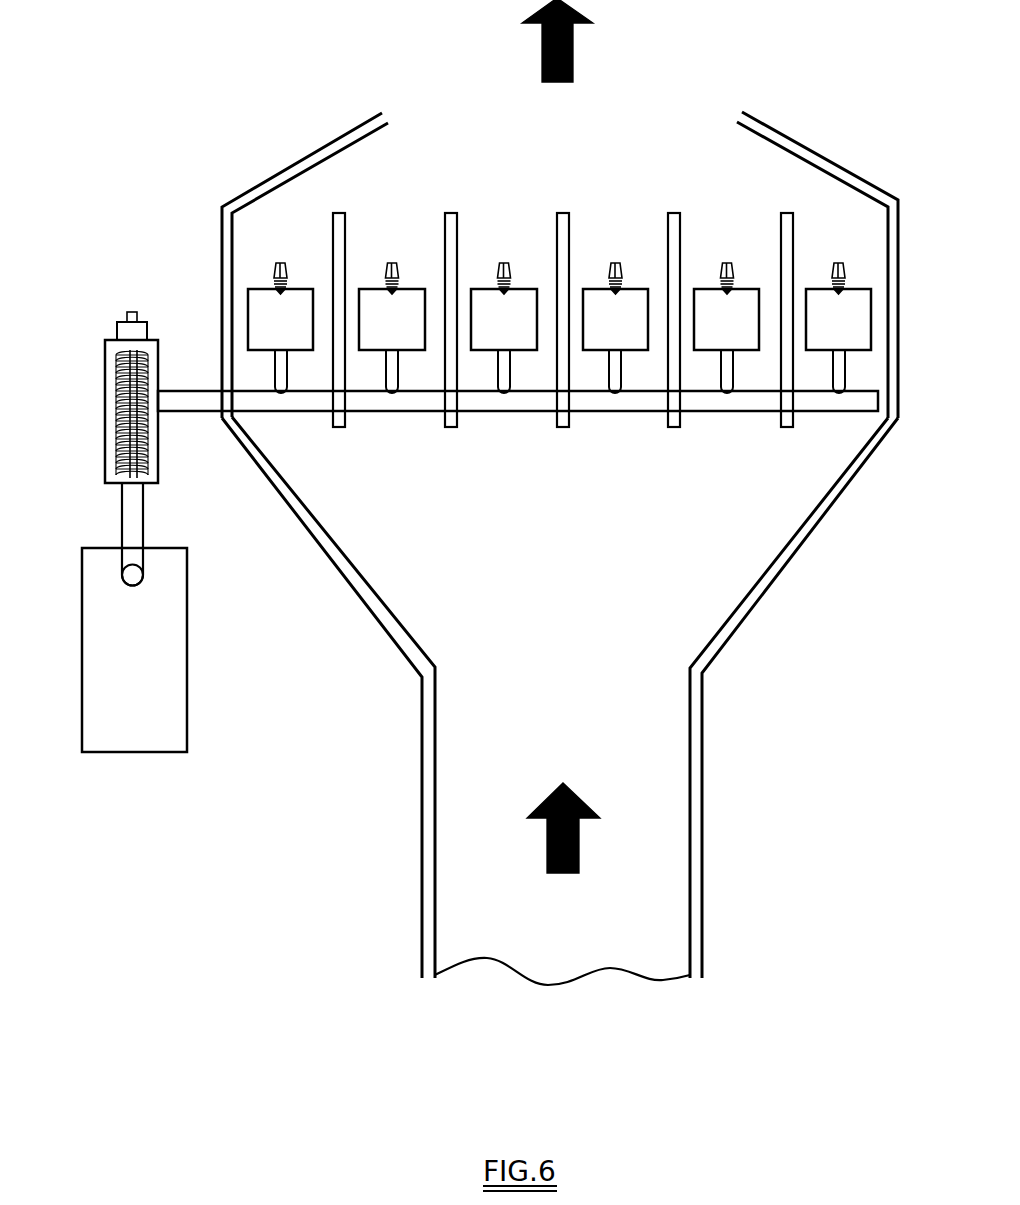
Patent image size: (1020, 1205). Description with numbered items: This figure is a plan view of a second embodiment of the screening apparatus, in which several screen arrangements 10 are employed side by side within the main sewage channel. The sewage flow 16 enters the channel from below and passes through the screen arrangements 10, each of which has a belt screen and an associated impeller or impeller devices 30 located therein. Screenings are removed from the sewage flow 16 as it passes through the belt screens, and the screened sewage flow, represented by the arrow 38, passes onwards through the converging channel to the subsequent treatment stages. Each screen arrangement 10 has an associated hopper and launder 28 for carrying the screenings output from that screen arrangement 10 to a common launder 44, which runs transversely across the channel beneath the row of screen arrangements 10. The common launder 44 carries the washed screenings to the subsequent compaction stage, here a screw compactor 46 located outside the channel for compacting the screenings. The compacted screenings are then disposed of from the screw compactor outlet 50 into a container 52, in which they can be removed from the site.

The screen arrangement 10 is at (240, 321).
The sewage flow 16 is at (580, 852).
The launder 28 is at (304, 388).
The impeller devices 30 is at (283, 262).
The screened sewage flow 38 is at (589, 41).
The common launder 44 is at (199, 420).
The screw compactor 46 is at (92, 328).
The screw compactor outlet 50 is at (135, 576).
The container 52 is at (138, 673).